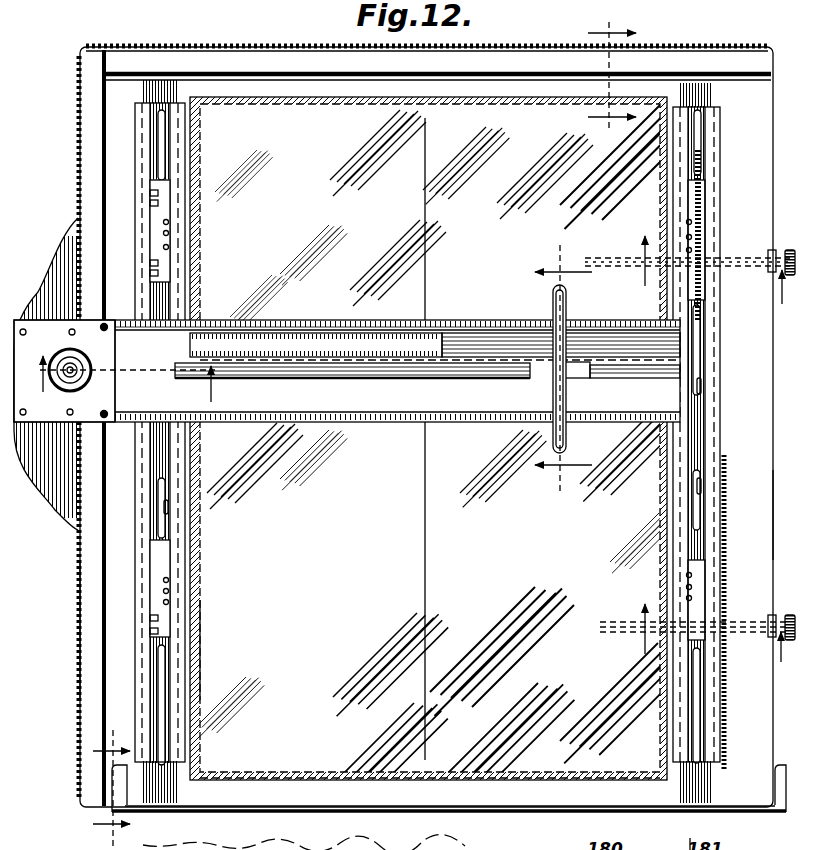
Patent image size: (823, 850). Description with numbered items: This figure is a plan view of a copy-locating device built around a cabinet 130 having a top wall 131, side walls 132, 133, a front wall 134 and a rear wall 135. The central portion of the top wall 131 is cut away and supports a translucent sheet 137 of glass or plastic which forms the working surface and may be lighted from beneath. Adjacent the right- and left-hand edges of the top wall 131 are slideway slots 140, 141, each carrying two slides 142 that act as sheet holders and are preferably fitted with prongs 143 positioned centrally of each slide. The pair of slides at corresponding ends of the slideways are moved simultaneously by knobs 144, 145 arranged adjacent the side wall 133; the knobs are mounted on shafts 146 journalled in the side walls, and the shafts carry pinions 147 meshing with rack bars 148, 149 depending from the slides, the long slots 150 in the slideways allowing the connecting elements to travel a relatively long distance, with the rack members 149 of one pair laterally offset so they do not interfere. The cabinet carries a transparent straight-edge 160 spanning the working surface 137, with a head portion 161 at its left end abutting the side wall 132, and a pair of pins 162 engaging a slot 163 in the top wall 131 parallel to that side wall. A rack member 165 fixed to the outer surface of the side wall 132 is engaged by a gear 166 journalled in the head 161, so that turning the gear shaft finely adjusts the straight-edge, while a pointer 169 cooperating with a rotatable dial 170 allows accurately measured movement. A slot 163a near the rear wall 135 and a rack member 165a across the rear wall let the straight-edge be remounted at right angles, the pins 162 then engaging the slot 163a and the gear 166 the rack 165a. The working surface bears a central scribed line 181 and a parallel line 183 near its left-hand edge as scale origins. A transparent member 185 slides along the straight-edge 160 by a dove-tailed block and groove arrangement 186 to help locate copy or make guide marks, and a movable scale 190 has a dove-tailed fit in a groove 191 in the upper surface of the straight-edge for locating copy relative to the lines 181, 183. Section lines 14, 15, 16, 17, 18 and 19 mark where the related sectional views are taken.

The section line 14- 14 is at (134, 379).
The section line 15- 15 is at (612, 77).
The section line 16- 16 is at (563, 369).
The section line 17- 17 is at (699, 644).
The section line 18- 18 is at (693, 270).
The section line 19- 19 is at (112, 782).
The cabinet 130 is at (82, 678).
The top wall 131 is at (330, 785).
The side wall 132 is at (80, 612).
The side wall 133 is at (772, 540).
The front wall 134 is at (216, 812).
The rear wall 135 is at (250, 48).
The translucent sheet 137 is at (447, 456).
The slot 140 is at (695, 447).
The second slot 141 is at (160, 460).
The slides 142 is at (690, 196).
The prongs 143 is at (172, 592).
The operating handle or knob 144 is at (787, 612).
The operating handle or knob 145 is at (787, 248).
The shafts 146 is at (760, 262).
The pinions 147 is at (703, 285).
The rack bars 148 is at (706, 337).
The rack bars 149 is at (728, 690).
The slots 150 is at (166, 507).
The straight-edge 160 is at (368, 395).
The head portion 161 is at (40, 280).
The pins 162 is at (106, 323).
The slot 163 is at (103, 190).
The slot 163a is at (500, 73).
The rack member 165 is at (78, 552).
The rack member 165a is at (158, 47).
The gear 166 is at (67, 392).
The pointer 169 is at (66, 350).
The scale or dial 170 is at (56, 360).
The line 181 is at (428, 242).
The line 183 is at (203, 668).
The transparent member 185 is at (552, 452).
The dove-tailed block and groove arrangement 186 is at (540, 372).
The movable scale 190 is at (340, 340).
The groove 191 is at (255, 330).